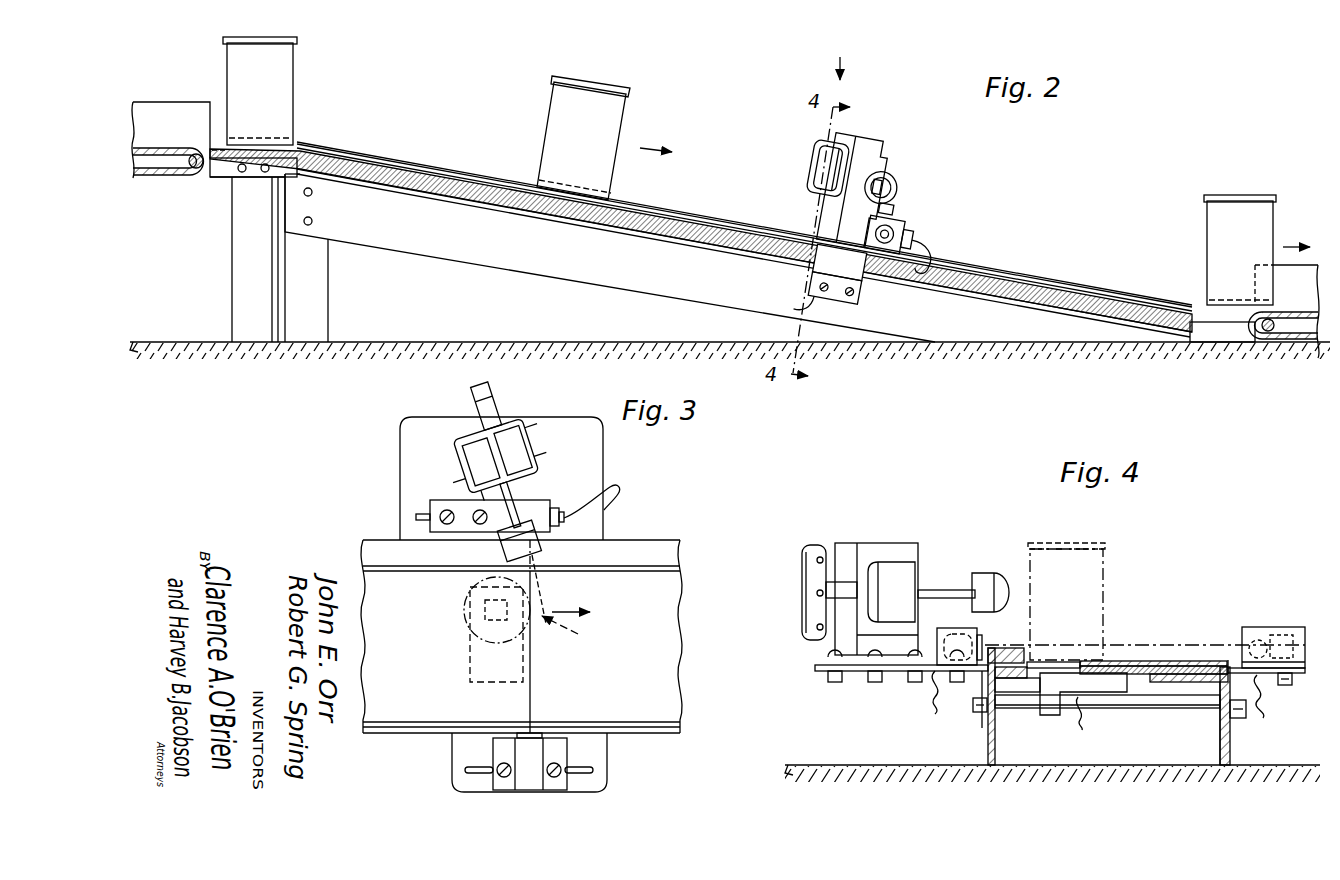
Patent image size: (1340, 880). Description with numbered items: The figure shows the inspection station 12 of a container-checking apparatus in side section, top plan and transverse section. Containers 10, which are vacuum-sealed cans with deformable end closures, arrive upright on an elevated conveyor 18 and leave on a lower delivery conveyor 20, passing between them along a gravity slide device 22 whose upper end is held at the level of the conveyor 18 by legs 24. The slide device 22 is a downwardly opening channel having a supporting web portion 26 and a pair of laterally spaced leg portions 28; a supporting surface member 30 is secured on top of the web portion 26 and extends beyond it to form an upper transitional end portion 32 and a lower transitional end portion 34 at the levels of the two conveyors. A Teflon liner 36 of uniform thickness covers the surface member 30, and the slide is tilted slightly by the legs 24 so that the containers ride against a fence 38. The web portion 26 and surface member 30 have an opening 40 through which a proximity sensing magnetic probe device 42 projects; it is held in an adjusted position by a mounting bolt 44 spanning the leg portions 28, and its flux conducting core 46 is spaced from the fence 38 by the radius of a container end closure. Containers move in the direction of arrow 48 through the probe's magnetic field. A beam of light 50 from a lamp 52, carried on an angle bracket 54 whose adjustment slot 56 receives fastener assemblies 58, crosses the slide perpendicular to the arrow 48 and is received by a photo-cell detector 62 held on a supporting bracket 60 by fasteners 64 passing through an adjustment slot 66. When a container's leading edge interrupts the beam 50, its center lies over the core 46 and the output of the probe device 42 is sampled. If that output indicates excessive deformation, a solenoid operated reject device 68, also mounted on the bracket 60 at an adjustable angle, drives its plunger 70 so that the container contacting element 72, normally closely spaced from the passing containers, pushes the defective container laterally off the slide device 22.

In FIG. 2, the containers 10 is at (548, 133).
In FIG. 3, the containers 10 is at (603, 648).
In FIG. 4, the containers 10 is at (1097, 584).
In FIG. 2, the inspection station 12 is at (843, 57).
In FIG. 2, the conveyor 18 is at (149, 177).
In FIG. 2, the delivery conveyor 20 is at (1300, 345).
In FIG. 2, the gravity slide device 22 is at (465, 269).
In FIG. 3, the gravity slide device 22 is at (661, 742).
In FIG. 2, the legs 24 is at (314, 282).
In FIG. 2, the web portion 26 is at (653, 226).
In FIG. 4, the web portion 26 is at (1177, 683).
In FIG. 2, the leg portions 28 is at (580, 255).
In FIG. 4, the leg portions 28 is at (1221, 734).
In FIG. 2, the supporting surface member 30 is at (454, 190).
In FIG. 4, the supporting surface member 30 is at (1157, 665).
In FIG. 2, the upper transitional end portion 32 is at (220, 172).
In FIG. 2, the lower transitional end portion 34 is at (1236, 320).
In FIG. 2, the Teflon liner 36 is at (700, 219).
In FIG. 4, the Teflon liner 36 is at (1124, 661).
In FIG. 2, the fence 38 is at (645, 206).
In FIG. 3, the fence 38 is at (658, 555).
In FIG. 4, the fence 38 is at (1008, 648).
In FIG. 2, the opening 40 is at (866, 270).
In FIG. 4, the opening 40 is at (1037, 680).
In FIG. 2, the proximity sensing magnetic probe device 42 is at (805, 266).
In FIG. 3, the proximity sensing magnetic probe device 42 is at (462, 663).
In FIG. 4, the proximity sensing magnetic probe device 42 is at (1105, 700).
In FIG. 4, the mounting bolt 44 is at (1138, 706).
In FIG. 3, the flux conducting core 46 is at (460, 608).
In FIG. 4, the flux conducting core 46 is at (1072, 660).
In FIG. 2, the arrow 48 is at (653, 147).
In FIG. 3, the arrow 48 is at (578, 609).
In FIG. 3, the beam of light 50 is at (531, 692).
In FIG. 4, the beam of light 50 is at (1165, 642).
In FIG. 3, the lamp 52 is at (531, 779).
In FIG. 4, the lamp 52 is at (1281, 627).
In FIG. 3, the angle bracket 54 is at (460, 743).
In FIG. 4, the angle bracket 54 is at (1294, 675).
In FIG. 3, the adjustment slot 56 is at (482, 768).
In FIG. 3, the fastener assemblies 58 is at (504, 778).
In FIG. 4, the fastener assemblies 58 is at (1286, 687).
In FIG. 3, the supporting bracket 60 is at (590, 455).
In FIG. 4, the supporting bracket 60 is at (928, 686).
In FIG. 2, the photo-cell detector 62 is at (903, 215).
In FIG. 3, the photo-cell detector 62 is at (551, 498).
In FIG. 4, the photo-cell detector 62 is at (957, 628).
In FIG. 3, the fasteners 64 is at (446, 509).
In FIG. 3, the adjustment slot 66 is at (420, 515).
In FIG. 2, the solenoid operated reject device 68 is at (880, 122).
In FIG. 3, the solenoid operated reject device 68 is at (515, 426).
In FIG. 4, the solenoid operated reject device 68 is at (903, 530).
In FIG. 3, the plunger 70 is at (522, 488).
In FIG. 4, the plunger 70 is at (931, 590).
In FIG. 2, the container contacting element 72 is at (895, 186).
In FIG. 3, the container contacting element 72 is at (503, 543).
In FIG. 4, the container contacting element 72 is at (995, 577).